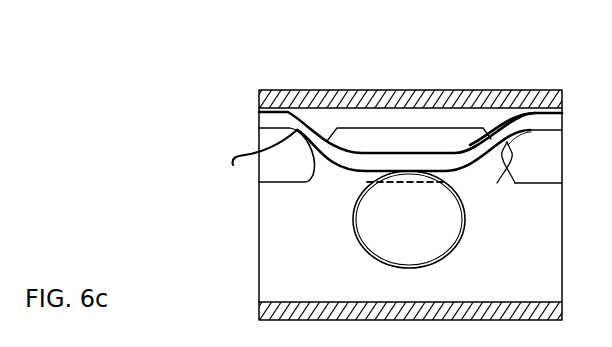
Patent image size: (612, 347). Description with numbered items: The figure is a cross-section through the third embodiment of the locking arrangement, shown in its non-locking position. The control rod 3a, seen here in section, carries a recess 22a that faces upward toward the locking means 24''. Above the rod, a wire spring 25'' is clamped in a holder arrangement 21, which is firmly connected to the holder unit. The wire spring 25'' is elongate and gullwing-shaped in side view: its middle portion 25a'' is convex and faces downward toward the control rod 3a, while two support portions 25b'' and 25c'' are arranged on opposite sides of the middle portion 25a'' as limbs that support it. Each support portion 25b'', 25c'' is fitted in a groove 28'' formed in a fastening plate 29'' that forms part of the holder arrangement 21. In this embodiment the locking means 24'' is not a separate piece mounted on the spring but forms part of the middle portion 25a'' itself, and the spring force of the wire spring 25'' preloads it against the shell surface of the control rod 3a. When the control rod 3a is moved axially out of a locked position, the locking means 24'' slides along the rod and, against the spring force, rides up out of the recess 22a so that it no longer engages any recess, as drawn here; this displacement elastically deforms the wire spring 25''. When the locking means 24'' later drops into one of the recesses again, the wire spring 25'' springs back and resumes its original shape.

The holder arrangement 21 is at (363, 91).
The recess 22a is at (427, 177).
The locking means 24'' is at (407, 191).
The wire spring 25'' is at (410, 182).
The middle portion 25a'' is at (409, 141).
The support portion 25b'' is at (288, 172).
The support portion 25c'' is at (521, 80).
The groove 28'' is at (251, 157).
The fastening plate 29'' is at (538, 217).
The control rod 3a is at (388, 248).